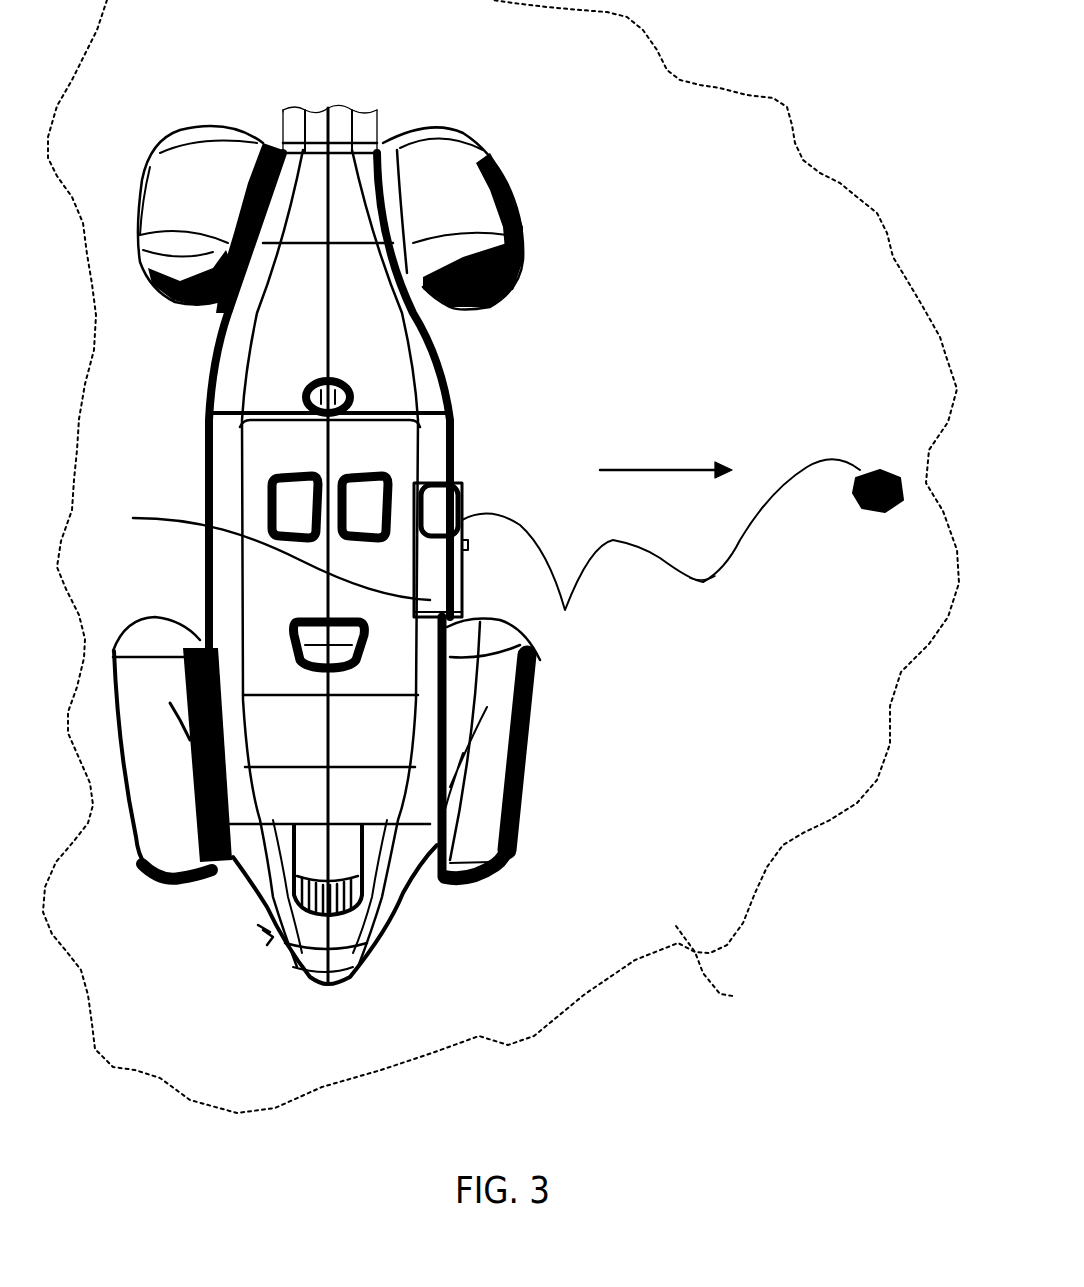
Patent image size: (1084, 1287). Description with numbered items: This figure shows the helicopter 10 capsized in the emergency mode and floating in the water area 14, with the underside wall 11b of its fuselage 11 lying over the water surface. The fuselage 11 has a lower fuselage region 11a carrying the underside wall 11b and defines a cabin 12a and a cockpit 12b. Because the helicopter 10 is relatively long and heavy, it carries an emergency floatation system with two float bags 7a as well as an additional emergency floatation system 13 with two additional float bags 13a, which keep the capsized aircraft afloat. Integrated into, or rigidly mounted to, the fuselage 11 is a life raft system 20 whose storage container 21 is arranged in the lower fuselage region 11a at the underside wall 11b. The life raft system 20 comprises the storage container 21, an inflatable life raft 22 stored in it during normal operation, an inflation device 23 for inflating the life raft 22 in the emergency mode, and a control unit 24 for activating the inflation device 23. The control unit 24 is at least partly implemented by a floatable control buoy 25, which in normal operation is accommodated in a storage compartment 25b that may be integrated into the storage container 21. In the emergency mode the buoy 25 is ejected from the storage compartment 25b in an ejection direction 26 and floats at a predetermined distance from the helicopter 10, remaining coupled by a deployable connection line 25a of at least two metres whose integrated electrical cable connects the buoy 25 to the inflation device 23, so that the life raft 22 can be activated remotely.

The helicopter 10 is at (208, 90).
The fuselage 11 is at (317, 544).
The lower fuselage region 11a is at (225, 600).
The underside wall 11b is at (285, 338).
The cabin 12a is at (190, 450).
The cockpit 12b is at (255, 920).
The additional emergency floatation system 13 is at (323, 182).
The additional float bags 13a is at (173, 203).
The water area 14 is at (501, 556).
The life raft system 20 is at (498, 556).
The storage container 21 is at (265, 555).
The inflatable life raft 22 is at (480, 605).
The inflation device 23 is at (462, 552).
The control unit 24 is at (878, 430).
The floatable control buoy 25 is at (703, 518).
The deployable connection line 25a is at (705, 612).
The storage compartment 25b is at (443, 520).
The ejection direction 26 is at (653, 470).
The float bags 7a is at (140, 841).